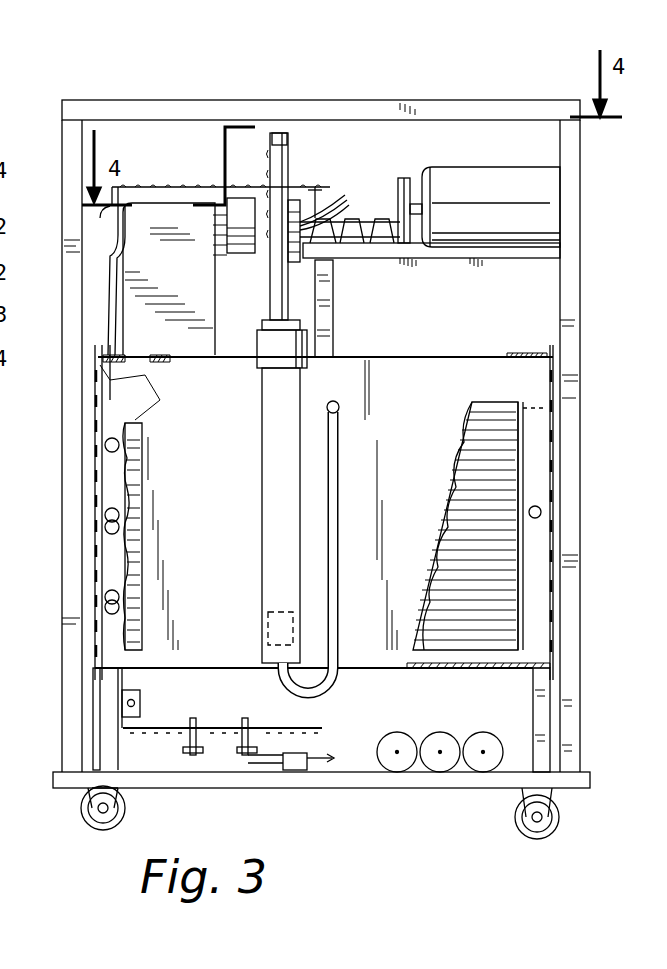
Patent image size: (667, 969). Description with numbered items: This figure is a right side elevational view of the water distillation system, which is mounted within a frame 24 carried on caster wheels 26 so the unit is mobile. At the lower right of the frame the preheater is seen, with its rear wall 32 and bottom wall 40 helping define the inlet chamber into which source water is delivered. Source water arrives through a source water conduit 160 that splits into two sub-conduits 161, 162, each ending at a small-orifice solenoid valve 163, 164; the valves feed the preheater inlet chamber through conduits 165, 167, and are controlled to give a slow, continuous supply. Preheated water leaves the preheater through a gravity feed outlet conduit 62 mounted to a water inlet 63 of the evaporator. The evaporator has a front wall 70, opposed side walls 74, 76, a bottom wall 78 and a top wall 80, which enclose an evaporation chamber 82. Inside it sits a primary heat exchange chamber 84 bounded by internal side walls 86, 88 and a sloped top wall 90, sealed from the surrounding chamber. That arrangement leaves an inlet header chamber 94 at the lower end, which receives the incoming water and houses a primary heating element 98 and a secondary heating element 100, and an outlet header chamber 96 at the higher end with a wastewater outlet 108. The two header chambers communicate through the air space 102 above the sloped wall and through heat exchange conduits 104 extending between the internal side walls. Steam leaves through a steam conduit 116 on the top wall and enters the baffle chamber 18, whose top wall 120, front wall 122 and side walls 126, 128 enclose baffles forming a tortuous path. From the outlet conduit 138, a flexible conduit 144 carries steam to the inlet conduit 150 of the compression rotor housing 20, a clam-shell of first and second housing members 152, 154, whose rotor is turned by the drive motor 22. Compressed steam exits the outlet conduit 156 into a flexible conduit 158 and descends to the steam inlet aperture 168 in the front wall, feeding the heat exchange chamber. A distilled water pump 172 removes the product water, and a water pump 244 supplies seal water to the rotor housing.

The baffle chamber 18 is at (158, 232).
The compression rotor housing 20 is at (288, 140).
The drive motor 22 is at (550, 204).
The frame 24 is at (582, 302).
The caster wheels 26 is at (125, 815).
The rear wall 32 is at (298, 300).
The bottom wall 40 is at (250, 735).
The gravity feed outlet conduit 62 is at (105, 252).
The water inlet 63 is at (104, 442).
The front wall 70 is at (430, 368).
The side wall 74 is at (102, 492).
The side wall 76 is at (555, 440).
The bottom wall 78 is at (494, 668).
The top wall 80 is at (482, 368).
The evaporation chamber 82 is at (548, 392).
The primary heat exchange chamber 84 is at (485, 652).
The internal side wall 86 is at (120, 460).
The internal side wall 88 is at (520, 650).
The sloped top wall 90 is at (488, 410).
The inlet header chamber 94 is at (108, 563).
The outlet header chamber 96 is at (535, 482).
The primary heating element 98 is at (104, 525).
The secondary heating element 100 is at (104, 608).
The air space 102 is at (516, 368).
The heat exchange conduits 104 is at (445, 655).
The wastewater outlet 108 is at (540, 515).
The steam conduit 116 is at (118, 360).
The top wall 120 is at (203, 205).
The front wall 122 is at (158, 205).
The side wall 126 is at (122, 236).
The side wall 128 is at (228, 345).
The outlet conduit 138 is at (230, 215).
The flexible conduit 144 is at (247, 250).
The inlet conduit 150 is at (262, 225).
The first housing member 152 is at (273, 133).
The second housing member 154 is at (290, 163).
The outlet conduit 156 is at (302, 328).
The flexible conduit 158 is at (300, 350).
The source water conduit 160 is at (342, 762).
The sub-conduit 161 is at (290, 725).
The sub-conduit 162 is at (212, 745).
The solenoid valve 163 is at (250, 760).
The solenoid valve 164 is at (185, 748).
The conduit 165 is at (245, 718).
The conduit 167 is at (195, 715).
The steam inlet aperture 168 is at (268, 625).
The distilled water pump 172 is at (478, 770).
The water pump 244 is at (388, 770).